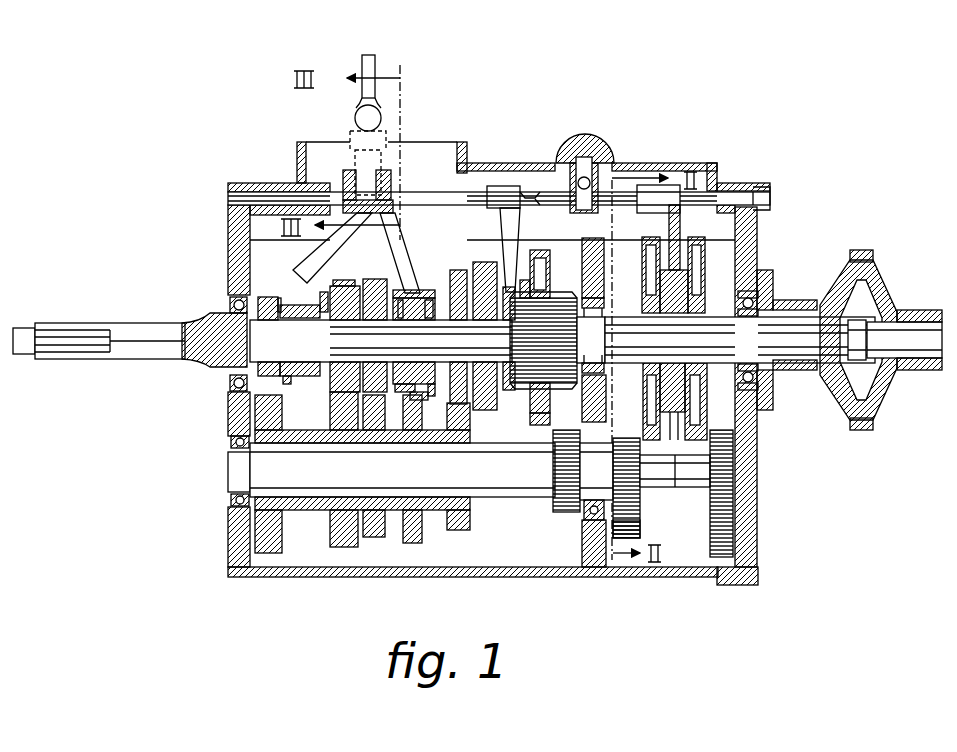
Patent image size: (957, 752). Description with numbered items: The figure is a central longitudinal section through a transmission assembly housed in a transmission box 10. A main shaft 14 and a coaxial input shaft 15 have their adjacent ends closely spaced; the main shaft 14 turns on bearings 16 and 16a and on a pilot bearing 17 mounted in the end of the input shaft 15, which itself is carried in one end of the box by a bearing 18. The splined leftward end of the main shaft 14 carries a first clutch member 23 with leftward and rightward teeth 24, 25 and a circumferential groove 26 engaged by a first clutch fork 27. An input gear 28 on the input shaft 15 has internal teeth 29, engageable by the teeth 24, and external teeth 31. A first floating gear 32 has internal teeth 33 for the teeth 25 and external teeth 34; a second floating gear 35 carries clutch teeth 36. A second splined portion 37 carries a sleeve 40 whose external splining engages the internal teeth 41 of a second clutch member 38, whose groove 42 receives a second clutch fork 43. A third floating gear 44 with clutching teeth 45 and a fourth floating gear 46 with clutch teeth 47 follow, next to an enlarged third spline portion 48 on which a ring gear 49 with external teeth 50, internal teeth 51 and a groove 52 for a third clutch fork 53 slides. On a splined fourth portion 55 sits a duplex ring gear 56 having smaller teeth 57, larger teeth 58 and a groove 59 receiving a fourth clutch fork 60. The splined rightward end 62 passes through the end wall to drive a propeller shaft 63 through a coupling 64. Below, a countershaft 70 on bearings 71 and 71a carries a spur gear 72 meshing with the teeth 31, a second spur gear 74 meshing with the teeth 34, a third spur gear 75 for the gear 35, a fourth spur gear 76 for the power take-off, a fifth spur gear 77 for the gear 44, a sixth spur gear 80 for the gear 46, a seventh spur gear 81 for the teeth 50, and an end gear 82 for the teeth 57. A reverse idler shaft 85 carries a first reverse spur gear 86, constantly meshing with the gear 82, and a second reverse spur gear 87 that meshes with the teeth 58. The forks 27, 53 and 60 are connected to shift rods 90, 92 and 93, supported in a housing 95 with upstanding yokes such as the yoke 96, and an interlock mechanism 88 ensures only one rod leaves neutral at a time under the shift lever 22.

The transmission box 10 is at (226, 580).
The main shaft 14 is at (381, 341).
The input shaft 15 is at (125, 356).
The bearing 16 is at (600, 318).
The bearing 16a is at (770, 385).
The pilot bearing 17 is at (228, 318).
The bearing 18 is at (232, 300).
The shift lever 22 is at (375, 72).
The first clutch member 23 is at (295, 378).
The leftward teeth 24 is at (268, 297).
The rightward teeth 25 is at (300, 305).
The circumferential groove 26 is at (290, 382).
The first clutch fork 27 is at (328, 243).
The input gear 28 is at (232, 383).
The internal teeth 29 is at (270, 378).
The external teeth 31 is at (279, 298).
The first floating gear 32 is at (350, 285).
The internal teeth 33 is at (323, 292).
The external teeth 34 is at (342, 280).
The second floating gear 35 is at (380, 279).
The clutch teeth 36 is at (400, 385).
The second splined portion 37 is at (430, 300).
The second clutch member 38 is at (420, 400).
The sleeve 40 is at (421, 298).
The internal teeth 41 is at (400, 300).
The circumferential groove 42 is at (428, 290).
The second clutch fork 43 is at (400, 218).
The third floating gear 44 is at (458, 270).
The clutching teeth 45 is at (431, 389).
The fourth floating gear 46 is at (485, 262).
The clutch teeth 47 is at (507, 287).
The third spline portion 48 is at (590, 375).
The ring gear 49 is at (530, 280).
The external teeth 50 is at (548, 255).
The internal teeth 51 is at (532, 395).
The circumferential groove 52 is at (530, 418).
The third clutch fork 53 is at (508, 235).
The fourth portion 55 is at (660, 330).
The duplex ring gear 56 is at (645, 240).
The first set of external gear teeth 57 is at (652, 441).
The second set of external teeth 58 is at (690, 441).
The groove 59 is at (672, 430).
The fourth clutch fork 60 is at (682, 244).
The rightward end 62 is at (820, 350).
The propeller shaft 63 is at (920, 312).
The coupling 64 is at (874, 264).
The countershaft 70 is at (391, 470).
The bearing 71 is at (231, 500).
The bearing 71a is at (585, 515).
The spur gear 72 is at (282, 545).
The second spur gear 74 is at (330, 535).
The third spur gear 75 is at (373, 538).
The fourth spur gear 76 is at (412, 543).
The fifth spur gear 77 is at (458, 531).
The sixth spur gear 80 is at (552, 505).
The seventh spur gear 81 is at (583, 480).
The gear 82 is at (623, 436).
The reverse idler shaft 85 is at (675, 490).
The first reverse spur gear 86 is at (642, 533).
The second reverse spur gear 87 is at (710, 540).
The interlock mechanism 88 is at (596, 148).
The shift rod 90 is at (300, 196).
The shift rod 92 is at (535, 195).
The shift rod 93 is at (670, 197).
The housing 95 is at (226, 197).
The yoke 96 is at (345, 185).